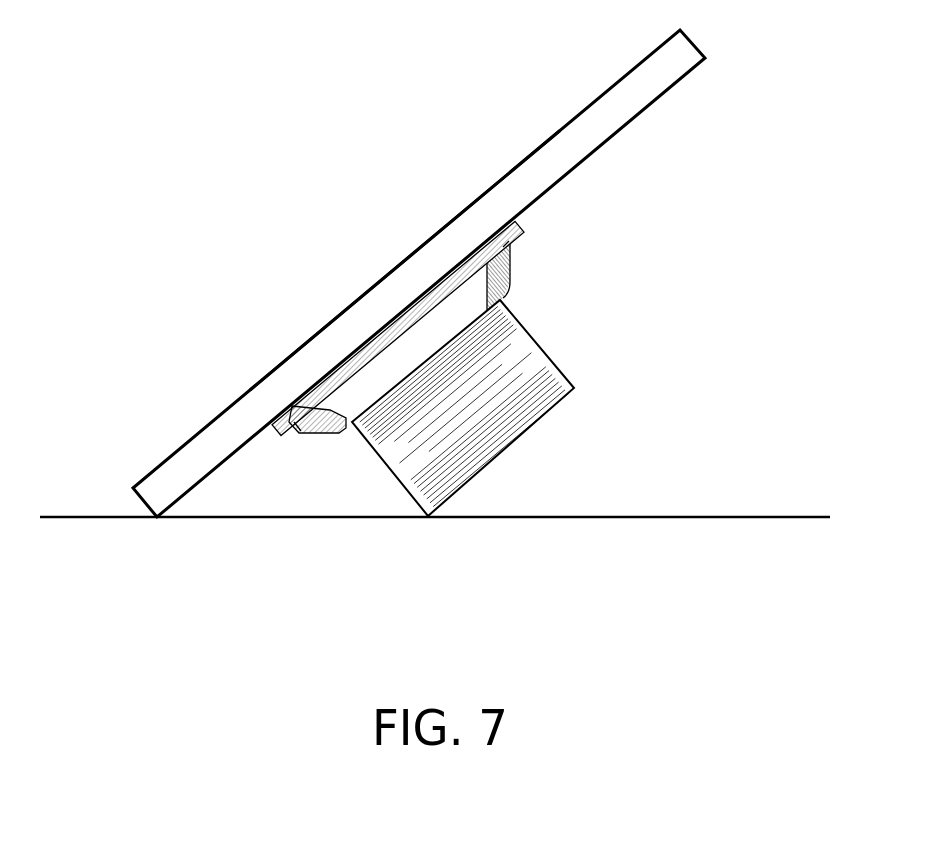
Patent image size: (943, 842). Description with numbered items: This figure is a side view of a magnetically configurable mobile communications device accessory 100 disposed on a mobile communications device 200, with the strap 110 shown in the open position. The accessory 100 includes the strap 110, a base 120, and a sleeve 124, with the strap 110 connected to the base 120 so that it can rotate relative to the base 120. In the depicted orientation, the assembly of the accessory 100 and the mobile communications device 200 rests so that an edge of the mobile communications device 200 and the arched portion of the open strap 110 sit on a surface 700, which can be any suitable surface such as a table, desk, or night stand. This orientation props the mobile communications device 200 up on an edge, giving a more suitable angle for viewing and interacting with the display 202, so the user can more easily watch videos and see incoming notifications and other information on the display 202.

The magnetically configurable mobile communications device accessory 100 is at (475, 360).
The strap 110 is at (497, 453).
The base 120 is at (519, 230).
The sleeve 124 is at (302, 432).
The mobile communications device 200 is at (623, 127).
The display 202 is at (391, 272).
The surface 700 is at (757, 516).